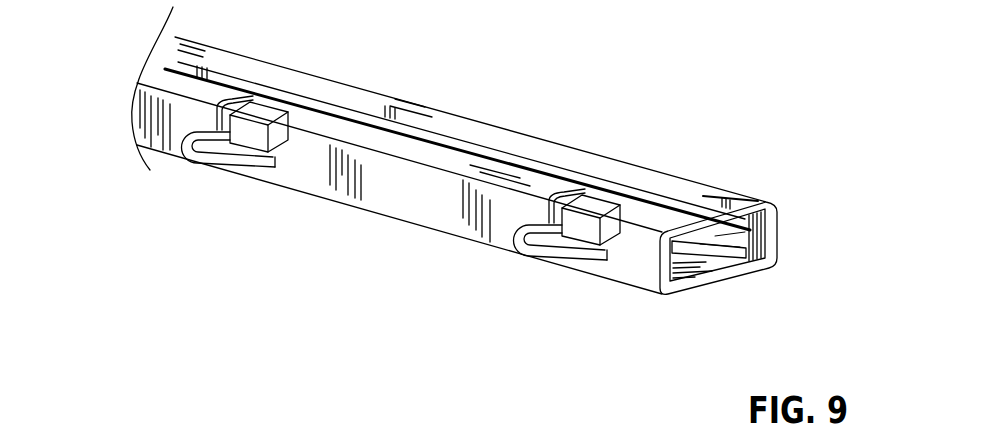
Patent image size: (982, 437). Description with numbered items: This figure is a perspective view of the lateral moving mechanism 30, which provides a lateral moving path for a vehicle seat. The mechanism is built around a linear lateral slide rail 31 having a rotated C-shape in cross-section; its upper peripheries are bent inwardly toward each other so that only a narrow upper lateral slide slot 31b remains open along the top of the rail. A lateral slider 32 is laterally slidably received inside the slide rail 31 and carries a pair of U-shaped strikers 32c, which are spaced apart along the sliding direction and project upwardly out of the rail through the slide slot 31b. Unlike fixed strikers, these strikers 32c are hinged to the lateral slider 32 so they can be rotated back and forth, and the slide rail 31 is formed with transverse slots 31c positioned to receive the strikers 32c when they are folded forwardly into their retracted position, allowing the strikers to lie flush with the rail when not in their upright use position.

The lateral moving mechanism 30 is at (409, 86).
The lateral slide rail 31 is at (478, 128).
The upper lateral slide slot 31b is at (517, 160).
The transverse slots 31c is at (295, 121).
The lateral slider 32 is at (698, 244).
The U-shaped strikers 32c is at (221, 112).